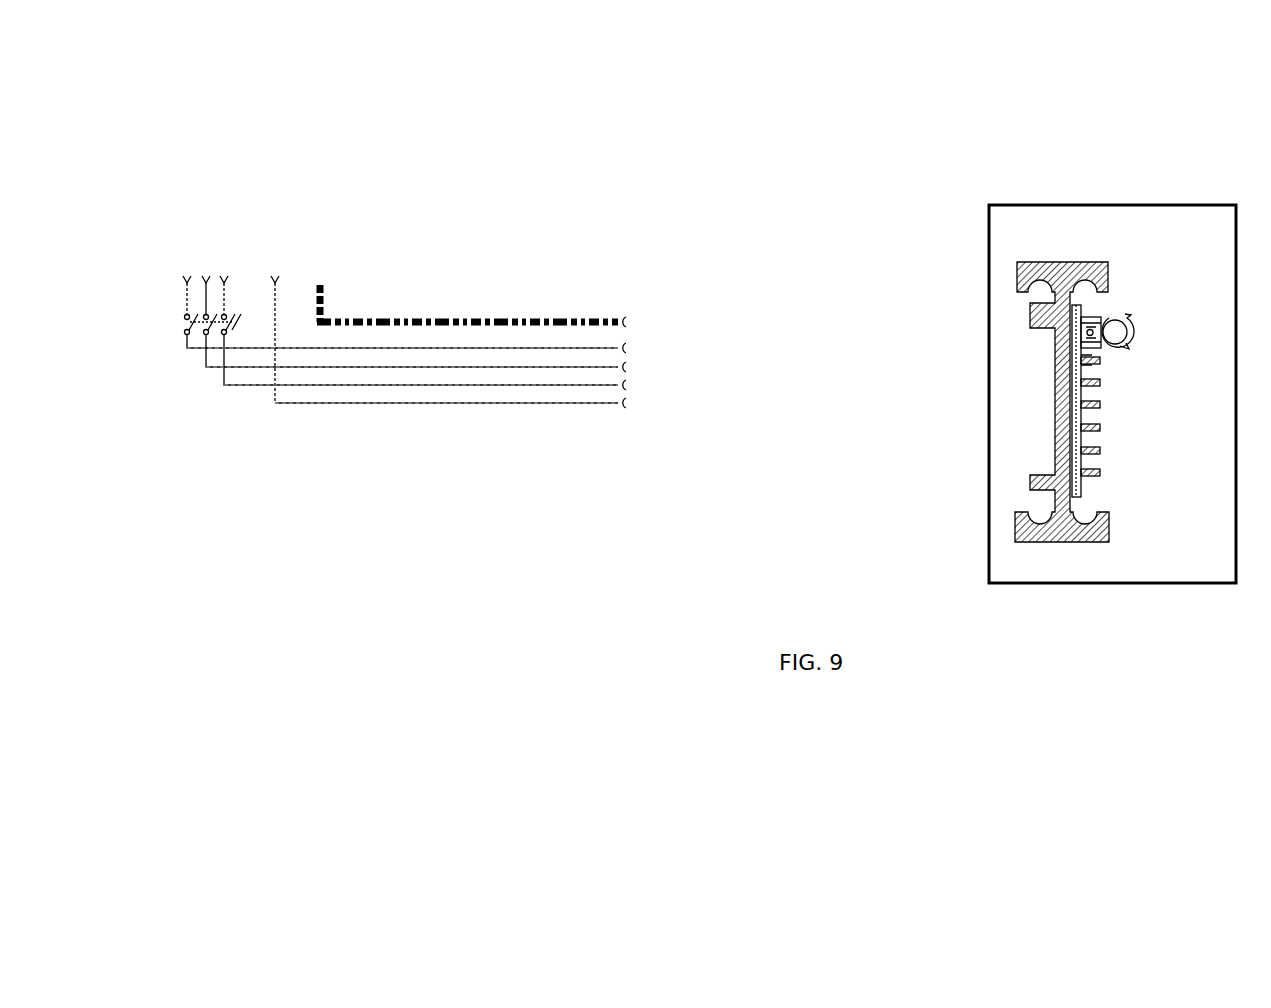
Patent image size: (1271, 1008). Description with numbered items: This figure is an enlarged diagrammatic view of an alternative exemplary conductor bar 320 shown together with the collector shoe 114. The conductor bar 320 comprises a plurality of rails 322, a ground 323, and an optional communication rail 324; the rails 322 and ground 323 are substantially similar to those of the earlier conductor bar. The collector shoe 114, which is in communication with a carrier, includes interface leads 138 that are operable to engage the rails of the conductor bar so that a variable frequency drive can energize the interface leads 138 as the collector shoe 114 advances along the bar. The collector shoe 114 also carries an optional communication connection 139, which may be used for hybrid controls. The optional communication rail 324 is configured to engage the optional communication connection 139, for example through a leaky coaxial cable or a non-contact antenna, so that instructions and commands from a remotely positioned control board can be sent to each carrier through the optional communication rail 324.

The conductor bar 320 is at (552, 270).
The rails 322 is at (650, 350).
The ground 323 is at (582, 405).
The optional communication rail 324 is at (469, 318).
The collector shoe 114 is at (1116, 223).
The interface leads 138 is at (1122, 449).
The optional communication connection 139 is at (1121, 318).